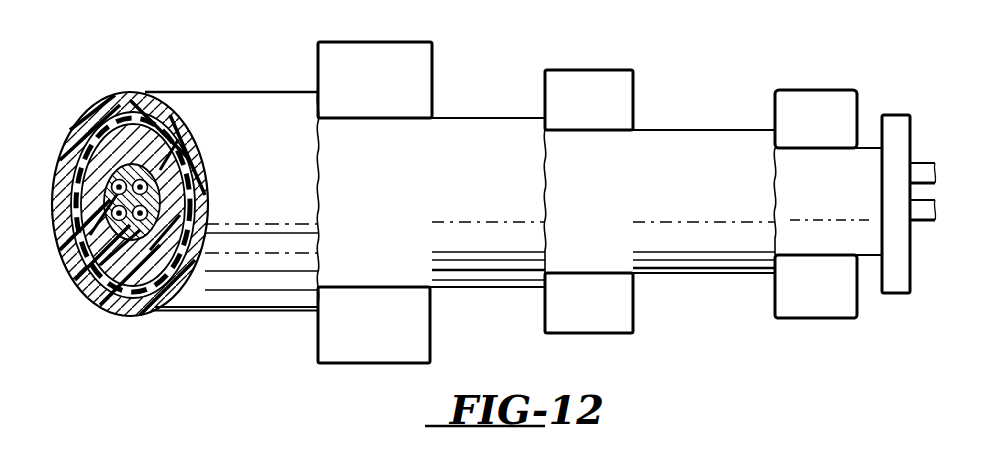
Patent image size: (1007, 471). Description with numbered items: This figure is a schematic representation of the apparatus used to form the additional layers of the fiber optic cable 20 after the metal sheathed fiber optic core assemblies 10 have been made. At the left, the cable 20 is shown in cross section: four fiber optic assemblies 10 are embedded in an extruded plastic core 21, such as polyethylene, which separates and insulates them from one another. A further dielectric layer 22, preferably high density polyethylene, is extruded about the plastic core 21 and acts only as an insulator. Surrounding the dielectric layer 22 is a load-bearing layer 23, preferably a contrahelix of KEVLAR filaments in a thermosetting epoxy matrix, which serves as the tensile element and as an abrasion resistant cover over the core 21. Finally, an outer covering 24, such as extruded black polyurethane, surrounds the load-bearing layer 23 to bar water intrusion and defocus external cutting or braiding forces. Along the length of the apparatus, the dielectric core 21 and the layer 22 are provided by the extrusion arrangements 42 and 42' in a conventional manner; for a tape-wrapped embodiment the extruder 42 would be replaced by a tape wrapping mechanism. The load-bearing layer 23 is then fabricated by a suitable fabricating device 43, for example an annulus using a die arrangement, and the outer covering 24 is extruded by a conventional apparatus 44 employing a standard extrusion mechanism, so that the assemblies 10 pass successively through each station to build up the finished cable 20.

The fiber optic assembly 10 is at (130, 240).
The cable 20 is at (148, 90).
The plastic core 21 is at (150, 160).
The dielectric layer 22 is at (163, 167).
The load-bearing layer 23 is at (150, 277).
The outer covering 24 is at (192, 257).
The extrusion arrangement 42 is at (896, 172).
The extrusion arrangement 42' is at (816, 178).
The fabricating device 43 is at (595, 70).
The extrusion apparatus 44 is at (400, 42).